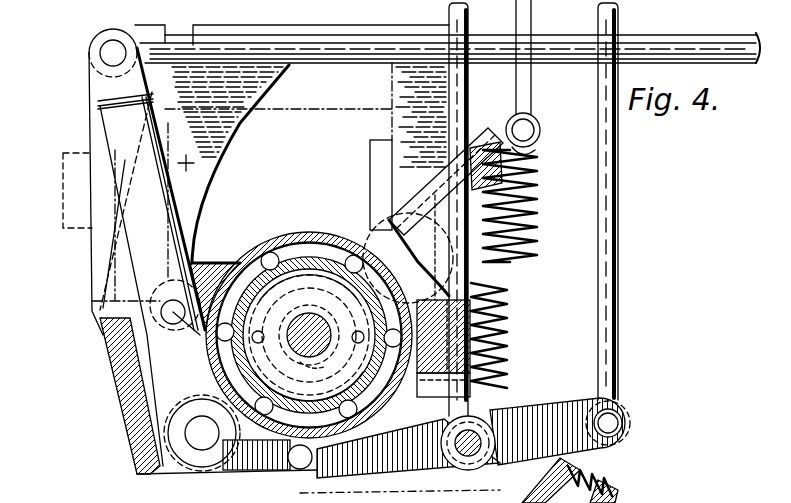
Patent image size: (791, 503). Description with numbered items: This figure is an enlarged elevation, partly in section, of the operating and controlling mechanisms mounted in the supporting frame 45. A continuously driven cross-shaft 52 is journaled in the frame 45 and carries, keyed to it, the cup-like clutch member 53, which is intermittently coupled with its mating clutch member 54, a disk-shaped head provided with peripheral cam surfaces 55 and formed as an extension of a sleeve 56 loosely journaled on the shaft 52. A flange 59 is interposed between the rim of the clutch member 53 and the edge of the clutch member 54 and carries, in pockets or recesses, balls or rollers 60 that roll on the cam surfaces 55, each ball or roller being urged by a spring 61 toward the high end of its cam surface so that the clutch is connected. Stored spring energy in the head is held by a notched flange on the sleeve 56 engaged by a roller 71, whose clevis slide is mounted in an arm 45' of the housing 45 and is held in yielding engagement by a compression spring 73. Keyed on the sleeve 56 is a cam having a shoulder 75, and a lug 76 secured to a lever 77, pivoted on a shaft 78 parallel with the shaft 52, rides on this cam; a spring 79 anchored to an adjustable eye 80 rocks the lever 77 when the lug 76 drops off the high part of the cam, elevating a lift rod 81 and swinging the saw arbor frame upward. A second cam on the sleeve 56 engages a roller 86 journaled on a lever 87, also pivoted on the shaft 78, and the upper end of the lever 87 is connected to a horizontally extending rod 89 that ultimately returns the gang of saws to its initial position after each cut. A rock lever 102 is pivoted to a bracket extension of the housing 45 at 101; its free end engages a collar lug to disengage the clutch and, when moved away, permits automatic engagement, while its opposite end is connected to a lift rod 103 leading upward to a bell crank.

The supporting frame 45 is at (185, 396).
The arm of housing 45' is at (595, 480).
The cross-shaft 52 is at (296, 318).
The clutch member 53 is at (279, 244).
The mating clutch member 54 is at (320, 250).
The cam surfaces 55 is at (322, 300).
The sleeve 56 is at (308, 368).
The flange 59 is at (250, 253).
The balls or rollers 60 is at (265, 232).
The spring 61 is at (291, 245).
The roller 71 is at (383, 248).
The compression spring 73 is at (593, 473).
The shoulder 75 is at (370, 147).
The lug 76 is at (290, 475).
The lever 77 is at (260, 473).
The shaft 78 is at (202, 447).
The spring 79 is at (530, 210).
The adjustable eye 80 is at (534, 97).
The lift rod 81 is at (469, 11).
The roller 86 is at (97, 303).
The lever 87 is at (137, 236).
The horizontally extending rod 89 is at (691, 42).
The pivot 101 is at (455, 470).
The rock lever 102 is at (543, 417).
The lift rod 103 is at (611, 313).